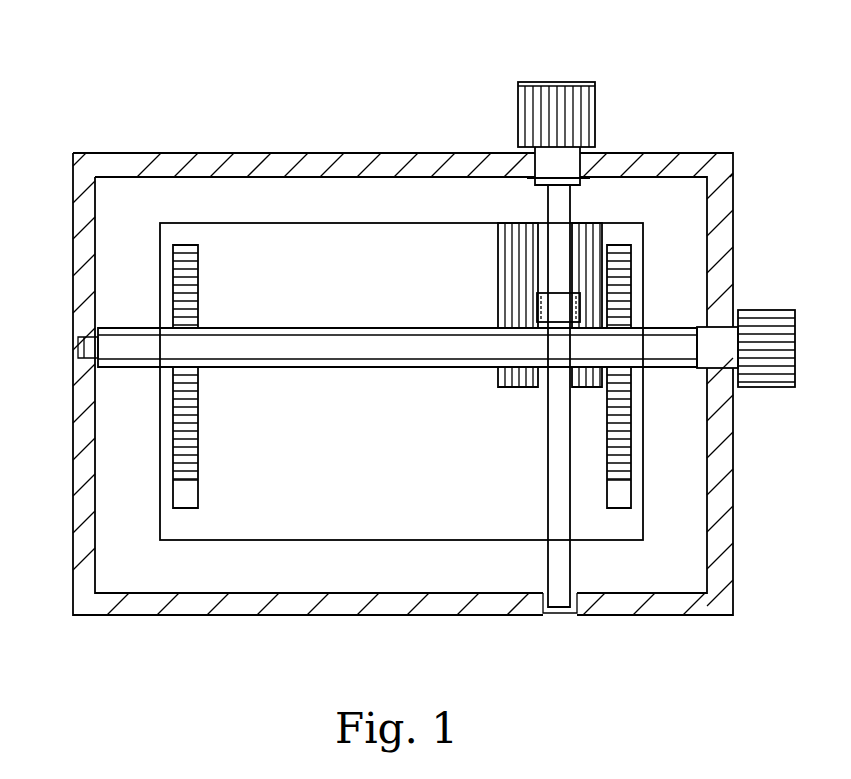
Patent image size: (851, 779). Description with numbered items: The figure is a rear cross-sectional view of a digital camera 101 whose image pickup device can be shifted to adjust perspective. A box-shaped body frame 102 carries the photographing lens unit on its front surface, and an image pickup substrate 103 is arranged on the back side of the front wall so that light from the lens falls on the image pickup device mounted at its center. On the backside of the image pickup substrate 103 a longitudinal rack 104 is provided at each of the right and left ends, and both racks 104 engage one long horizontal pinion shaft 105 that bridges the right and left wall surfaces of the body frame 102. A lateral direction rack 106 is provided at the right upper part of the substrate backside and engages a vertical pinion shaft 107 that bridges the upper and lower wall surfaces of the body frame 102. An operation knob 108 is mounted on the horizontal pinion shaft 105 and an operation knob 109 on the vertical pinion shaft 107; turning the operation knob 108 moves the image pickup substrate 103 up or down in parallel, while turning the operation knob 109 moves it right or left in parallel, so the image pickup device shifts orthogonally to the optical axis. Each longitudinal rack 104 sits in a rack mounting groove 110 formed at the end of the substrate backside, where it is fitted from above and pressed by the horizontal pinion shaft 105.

The digital camera 101 is at (228, 130).
The body frame 102 is at (73, 252).
The image pickup substrate 103 is at (283, 245).
The longitudinal rack 104 is at (188, 245).
The horizontal pinion shaft 105 is at (360, 328).
The lateral direction rack 106 is at (503, 262).
The vertical pinion shaft 107 is at (560, 293).
The operation knob 108 is at (758, 310).
The operation knob 109 is at (561, 84).
The rack mounting groove 110 is at (190, 508).